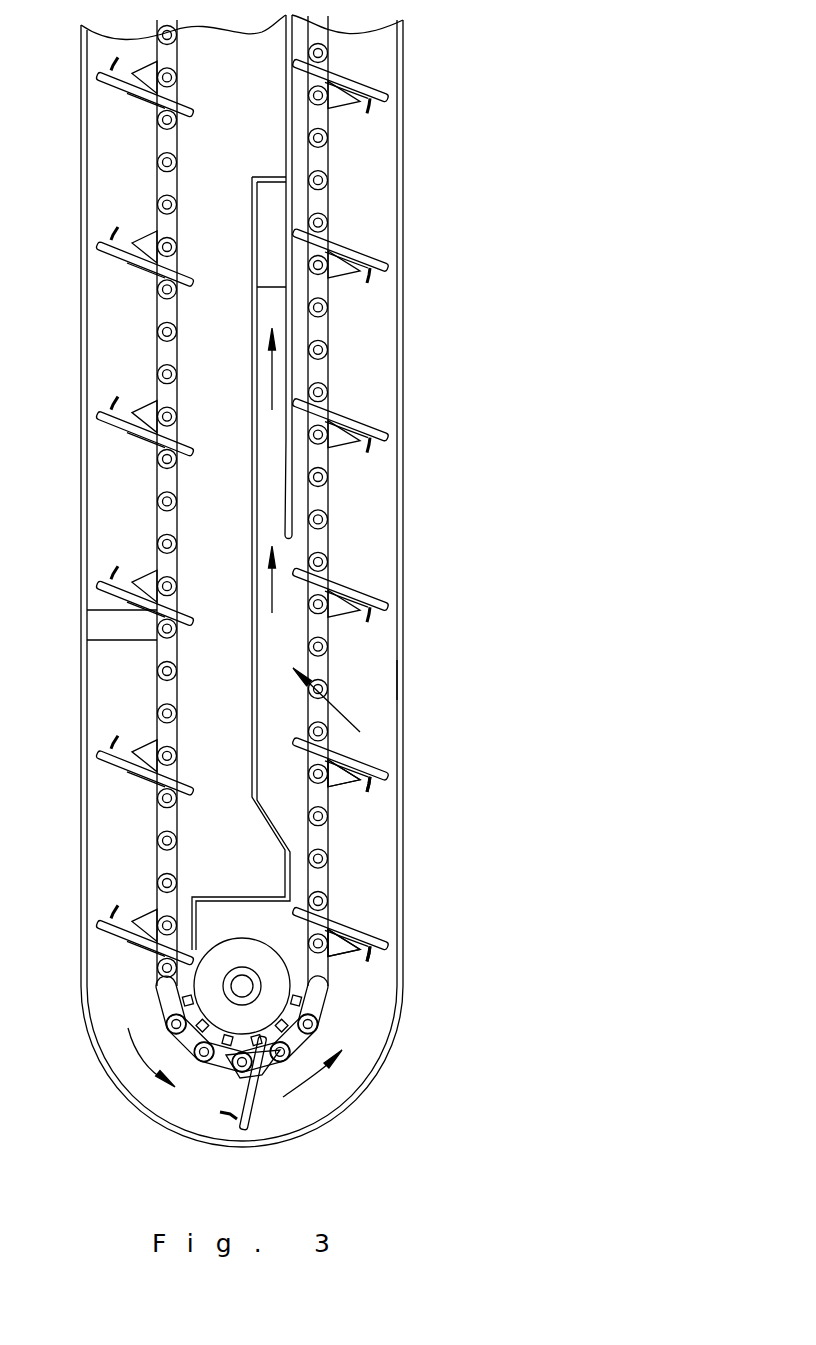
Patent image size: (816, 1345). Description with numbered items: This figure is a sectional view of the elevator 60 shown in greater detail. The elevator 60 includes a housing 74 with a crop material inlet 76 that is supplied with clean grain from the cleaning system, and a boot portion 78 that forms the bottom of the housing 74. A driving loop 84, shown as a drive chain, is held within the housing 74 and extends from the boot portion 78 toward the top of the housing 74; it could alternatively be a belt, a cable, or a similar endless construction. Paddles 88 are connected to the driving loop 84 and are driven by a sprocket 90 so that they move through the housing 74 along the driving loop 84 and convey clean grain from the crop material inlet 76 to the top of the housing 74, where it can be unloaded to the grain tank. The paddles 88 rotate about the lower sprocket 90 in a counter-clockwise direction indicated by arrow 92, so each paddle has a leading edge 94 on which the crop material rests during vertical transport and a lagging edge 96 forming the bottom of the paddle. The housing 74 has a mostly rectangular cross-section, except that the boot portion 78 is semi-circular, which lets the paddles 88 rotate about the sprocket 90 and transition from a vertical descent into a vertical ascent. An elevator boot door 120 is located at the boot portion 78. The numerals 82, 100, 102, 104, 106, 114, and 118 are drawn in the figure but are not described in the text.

The elevator 60 is at (584, 234).
The housing 74 is at (405, 358).
The crop material inlet 76 is at (122, 818).
The boot portion 78 is at (310, 1133).
The chain 82 is at (300, 556).
The driving loop 84 is at (320, 500).
The paddles 88 is at (193, 111).
The sprocket 90 is at (250, 1000).
The arrow 92 is at (135, 1062).
The leading edge 94 is at (365, 755).
The lagging edge 96 is at (352, 775).
The material flow direction 100 is at (280, 379).
The housing side wall 102 is at (405, 737).
The divider channel 104 is at (252, 495).
The divider wall 106 is at (298, 310).
The divider lower end 114 is at (269, 540).
The housing wall 118 is at (405, 682).
The elevator boot door 120 is at (405, 1002).